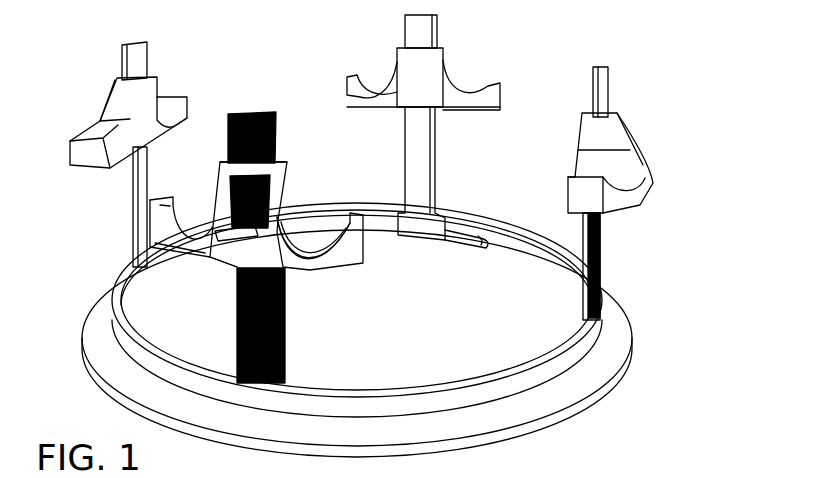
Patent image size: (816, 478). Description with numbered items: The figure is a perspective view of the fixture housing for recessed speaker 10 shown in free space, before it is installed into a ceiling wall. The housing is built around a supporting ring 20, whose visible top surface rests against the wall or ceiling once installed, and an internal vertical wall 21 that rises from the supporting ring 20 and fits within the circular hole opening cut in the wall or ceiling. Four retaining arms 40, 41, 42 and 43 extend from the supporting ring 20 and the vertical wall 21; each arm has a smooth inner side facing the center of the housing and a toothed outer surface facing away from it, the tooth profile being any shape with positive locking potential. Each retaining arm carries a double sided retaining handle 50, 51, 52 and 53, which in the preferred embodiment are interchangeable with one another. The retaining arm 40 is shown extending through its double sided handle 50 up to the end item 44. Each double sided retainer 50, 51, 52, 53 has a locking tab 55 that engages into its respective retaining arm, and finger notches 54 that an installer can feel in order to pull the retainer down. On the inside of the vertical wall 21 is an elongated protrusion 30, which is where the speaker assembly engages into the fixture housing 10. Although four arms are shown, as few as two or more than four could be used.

The fixture housing for recessed speaker 10 is at (712, 295).
The supporting ring 20 is at (627, 355).
The internal vertical wall 21 is at (112, 318).
The elongated protrusion 30 is at (478, 237).
The retaining arm 40 is at (598, 235).
The retaining arm 41 is at (403, 153).
The retaining arm 42 is at (130, 177).
The retaining arm 43 is at (282, 347).
The end of retaining arm 44 is at (607, 72).
The double sided retaining handle 50 is at (570, 188).
The double sided retaining handle 51 is at (398, 62).
The double sided retaining handle 52 is at (107, 110).
The double sided retaining handle 53 is at (355, 255).
The finger notches 54 is at (312, 237).
The locking tab 55 is at (257, 238).